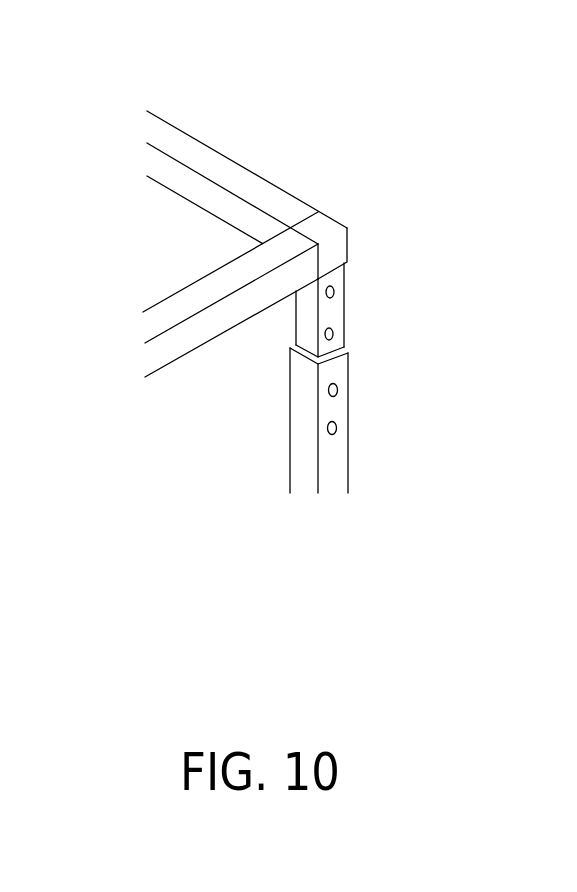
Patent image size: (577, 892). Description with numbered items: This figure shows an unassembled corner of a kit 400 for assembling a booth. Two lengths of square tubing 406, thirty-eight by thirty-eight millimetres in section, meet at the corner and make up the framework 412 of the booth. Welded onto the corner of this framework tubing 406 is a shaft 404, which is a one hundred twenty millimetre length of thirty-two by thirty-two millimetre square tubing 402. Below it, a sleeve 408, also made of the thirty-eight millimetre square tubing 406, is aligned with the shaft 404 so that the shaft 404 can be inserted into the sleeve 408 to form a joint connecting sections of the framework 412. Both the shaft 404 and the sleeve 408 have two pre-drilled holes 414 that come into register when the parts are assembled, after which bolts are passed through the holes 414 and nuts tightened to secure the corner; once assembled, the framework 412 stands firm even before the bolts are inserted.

The kit 400 is at (388, 270).
The square tubing 402 is at (297, 342).
The shaft 404 is at (354, 330).
The square tubing 406 is at (347, 243).
The sleeve 408 is at (365, 455).
The framework 412 is at (258, 120).
The holes 414 is at (327, 333).